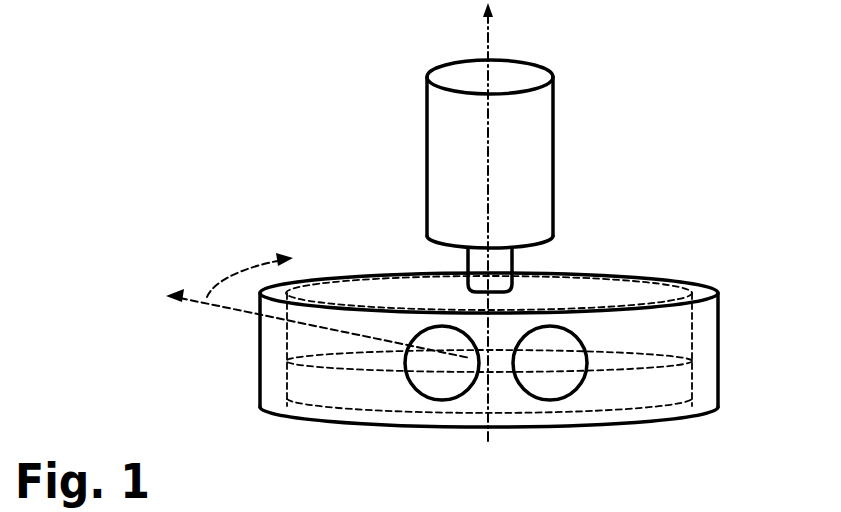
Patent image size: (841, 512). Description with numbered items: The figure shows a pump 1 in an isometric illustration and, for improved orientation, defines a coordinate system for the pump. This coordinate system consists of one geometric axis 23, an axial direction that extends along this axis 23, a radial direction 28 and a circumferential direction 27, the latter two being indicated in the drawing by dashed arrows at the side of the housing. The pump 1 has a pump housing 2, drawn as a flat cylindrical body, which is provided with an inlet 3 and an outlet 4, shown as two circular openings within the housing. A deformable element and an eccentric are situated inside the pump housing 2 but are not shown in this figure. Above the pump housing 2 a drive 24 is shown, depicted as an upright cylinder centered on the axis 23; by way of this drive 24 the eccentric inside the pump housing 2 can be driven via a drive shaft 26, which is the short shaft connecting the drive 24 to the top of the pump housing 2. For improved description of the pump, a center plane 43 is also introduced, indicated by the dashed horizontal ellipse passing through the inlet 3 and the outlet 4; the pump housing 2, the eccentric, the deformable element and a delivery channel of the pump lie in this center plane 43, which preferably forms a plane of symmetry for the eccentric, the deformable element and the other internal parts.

The pump 1 is at (317, 152).
The pump housing 2 is at (260, 362).
The inlet 3 is at (426, 394).
The outlet 4 is at (566, 394).
The geometric axis 23 is at (490, 38).
The drive 24 is at (553, 195).
The drive shaft 26 is at (512, 260).
The circumferential direction 27 is at (247, 266).
The radial direction 28 is at (190, 290).
The center plane 43 is at (662, 366).